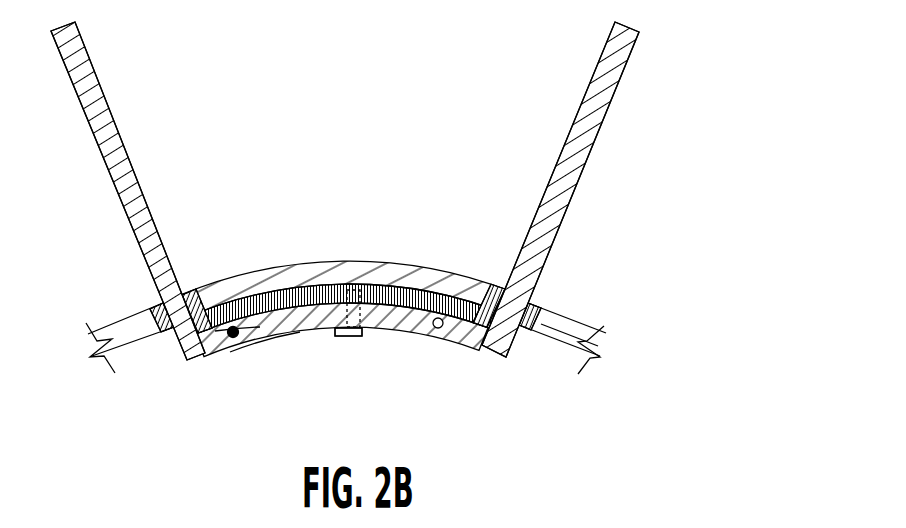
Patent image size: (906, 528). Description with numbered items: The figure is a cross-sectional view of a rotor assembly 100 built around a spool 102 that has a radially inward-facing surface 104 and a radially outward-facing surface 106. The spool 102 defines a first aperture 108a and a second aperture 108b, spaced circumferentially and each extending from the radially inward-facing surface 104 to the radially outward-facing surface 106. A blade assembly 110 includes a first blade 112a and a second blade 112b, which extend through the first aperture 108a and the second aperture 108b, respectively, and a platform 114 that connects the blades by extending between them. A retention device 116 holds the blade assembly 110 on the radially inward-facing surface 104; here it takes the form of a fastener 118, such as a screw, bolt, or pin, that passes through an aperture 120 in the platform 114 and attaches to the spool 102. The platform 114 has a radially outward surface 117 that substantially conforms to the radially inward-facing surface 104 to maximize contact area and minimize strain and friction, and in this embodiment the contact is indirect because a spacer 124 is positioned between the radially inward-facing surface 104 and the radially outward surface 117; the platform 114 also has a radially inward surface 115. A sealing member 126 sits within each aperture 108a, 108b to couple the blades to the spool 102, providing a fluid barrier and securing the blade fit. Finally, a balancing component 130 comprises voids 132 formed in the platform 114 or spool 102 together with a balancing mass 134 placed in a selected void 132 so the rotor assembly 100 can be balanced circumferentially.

The rotor assembly 100 is at (742, 128).
The spool 102 is at (553, 330).
The radially inward-facing surface 104 is at (536, 333).
The radially outward-facing surface 106 is at (573, 322).
The first aperture 108a is at (158, 368).
The second aperture 108b is at (502, 272).
The blade assembly 110 is at (131, 223).
The first blade 112a is at (118, 147).
The second blade 112b is at (598, 117).
The platform 114 is at (477, 340).
The radially inward surface 115 is at (278, 340).
The retention device 116 is at (345, 338).
The radially outward surface 117 is at (288, 302).
The fastener 118 is at (360, 337).
The aperture 120 is at (365, 312).
The spacer 124 is at (438, 298).
The sealing member 126 is at (192, 283).
The balancing component 130 is at (247, 322).
The void 132 is at (437, 332).
The balancing mass 134 is at (236, 340).